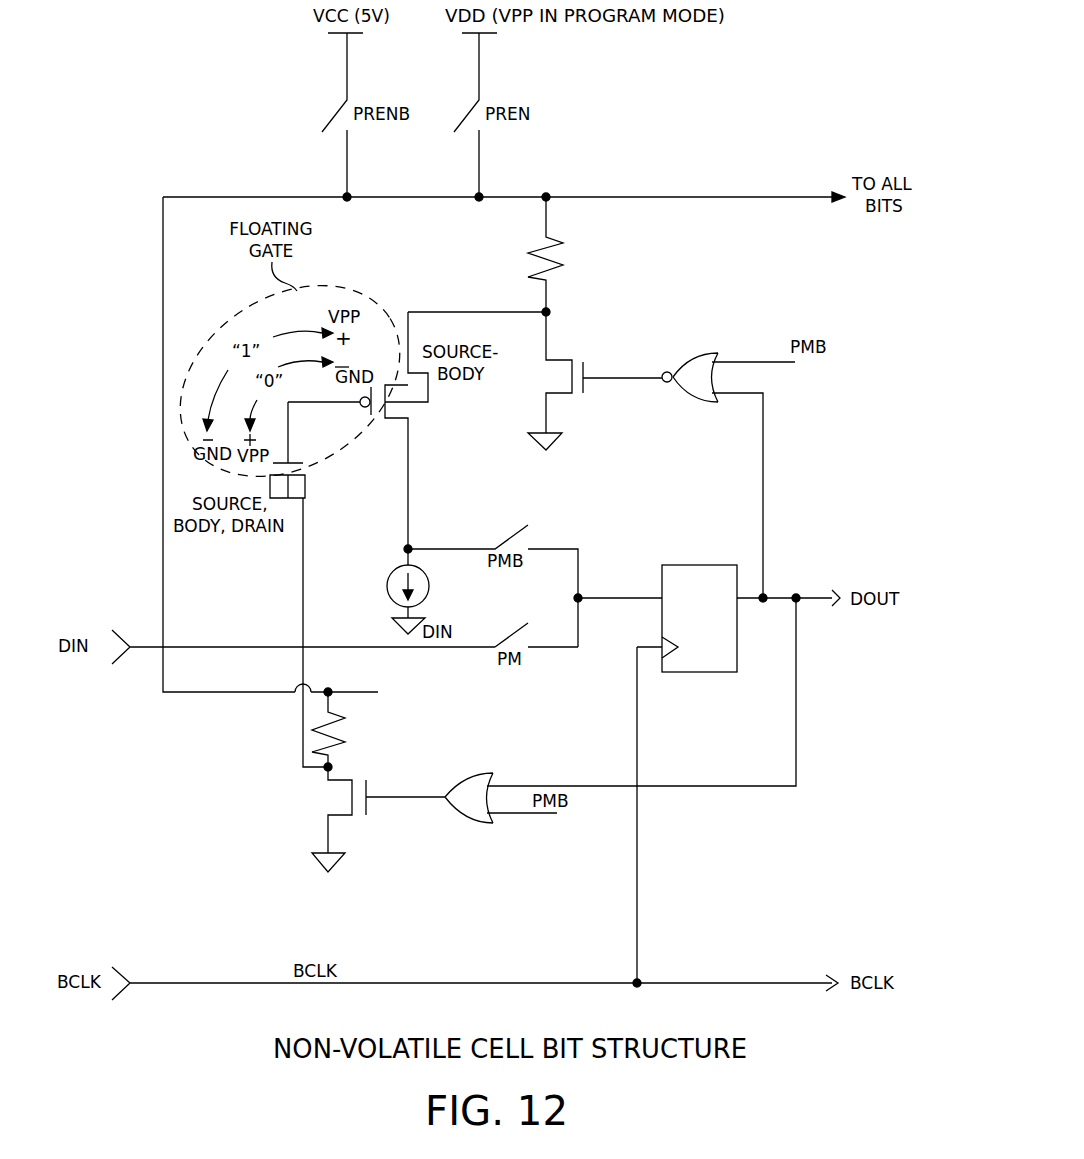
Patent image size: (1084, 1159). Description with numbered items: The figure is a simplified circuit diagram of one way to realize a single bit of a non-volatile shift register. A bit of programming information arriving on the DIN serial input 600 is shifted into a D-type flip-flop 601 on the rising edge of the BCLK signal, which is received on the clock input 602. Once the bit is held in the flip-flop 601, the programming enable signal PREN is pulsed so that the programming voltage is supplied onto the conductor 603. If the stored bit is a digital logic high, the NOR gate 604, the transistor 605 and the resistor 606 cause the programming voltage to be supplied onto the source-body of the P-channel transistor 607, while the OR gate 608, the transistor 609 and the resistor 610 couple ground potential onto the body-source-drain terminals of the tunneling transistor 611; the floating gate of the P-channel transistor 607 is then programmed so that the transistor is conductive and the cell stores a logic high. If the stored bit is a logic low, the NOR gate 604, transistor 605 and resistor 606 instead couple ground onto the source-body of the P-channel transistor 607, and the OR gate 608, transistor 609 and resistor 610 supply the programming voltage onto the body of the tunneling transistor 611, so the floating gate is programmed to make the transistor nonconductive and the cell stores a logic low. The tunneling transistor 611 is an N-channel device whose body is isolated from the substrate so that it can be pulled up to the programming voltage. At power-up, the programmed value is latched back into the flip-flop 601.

The DIN serial input 600 is at (138, 647).
The D-type flip-flop 601 is at (715, 637).
The clock input 602 is at (140, 982).
The conductor 603 is at (210, 196).
The NOR gate 604 is at (698, 355).
The transistor 605 is at (566, 361).
The resistor 606 is at (531, 259).
The P-channel transistor 607 is at (430, 391).
The OR gate 608 is at (474, 777).
The transistor 609 is at (335, 796).
The resistor 610 is at (345, 732).
The tunneling transistor 611 is at (306, 488).